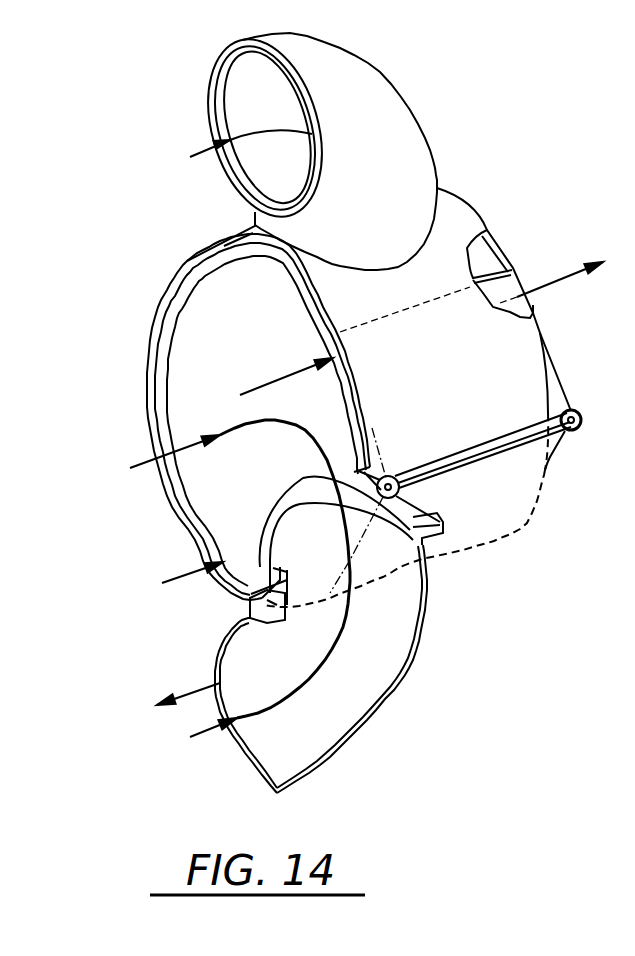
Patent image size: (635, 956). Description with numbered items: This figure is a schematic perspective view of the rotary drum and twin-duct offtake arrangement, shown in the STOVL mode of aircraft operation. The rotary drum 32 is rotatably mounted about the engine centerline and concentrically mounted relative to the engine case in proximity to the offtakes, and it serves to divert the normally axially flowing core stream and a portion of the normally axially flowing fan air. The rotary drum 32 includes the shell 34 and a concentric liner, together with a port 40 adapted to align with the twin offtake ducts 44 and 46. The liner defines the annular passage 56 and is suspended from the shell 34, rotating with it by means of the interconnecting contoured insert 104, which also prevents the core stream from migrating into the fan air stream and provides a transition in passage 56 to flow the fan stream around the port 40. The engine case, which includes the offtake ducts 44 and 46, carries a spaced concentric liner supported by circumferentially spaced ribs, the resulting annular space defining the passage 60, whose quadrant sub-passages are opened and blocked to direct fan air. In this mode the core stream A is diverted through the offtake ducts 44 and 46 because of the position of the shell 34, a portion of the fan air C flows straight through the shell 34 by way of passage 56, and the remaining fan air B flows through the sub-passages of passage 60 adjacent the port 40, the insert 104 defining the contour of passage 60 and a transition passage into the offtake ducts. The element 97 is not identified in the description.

The rotary drum 32 is at (133, 300).
The shell 34 is at (190, 257).
The port 40 is at (290, 520).
The offtake duct 44 is at (408, 118).
The offtake duct 46 is at (420, 620).
The annular passage 56 is at (268, 268).
The passage 60 is at (327, 308).
The curved guide 97 is at (287, 587).
The contoured insert 104 is at (440, 523).